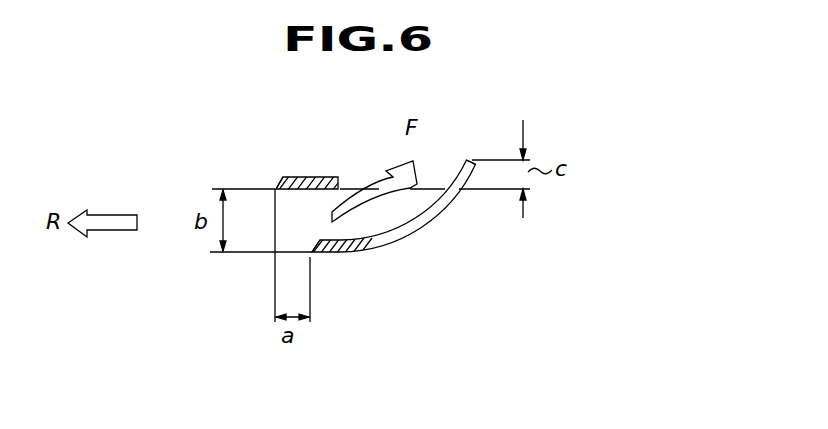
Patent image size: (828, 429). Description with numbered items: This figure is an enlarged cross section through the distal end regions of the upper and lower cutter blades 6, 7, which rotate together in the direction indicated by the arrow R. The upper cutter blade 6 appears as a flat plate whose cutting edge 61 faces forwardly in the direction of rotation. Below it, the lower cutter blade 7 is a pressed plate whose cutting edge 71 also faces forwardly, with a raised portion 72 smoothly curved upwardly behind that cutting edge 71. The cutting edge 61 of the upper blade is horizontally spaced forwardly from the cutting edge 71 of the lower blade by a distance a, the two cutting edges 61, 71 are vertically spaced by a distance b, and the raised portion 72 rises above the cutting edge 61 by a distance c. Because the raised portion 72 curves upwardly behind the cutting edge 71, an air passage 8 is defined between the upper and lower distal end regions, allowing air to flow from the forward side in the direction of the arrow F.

The upper cutter blade 6 is at (307, 176).
The cutting edges 61 is at (281, 188).
The lower cutter blade 7 is at (387, 252).
The cutting edges 71 is at (317, 240).
The raised portions 72 is at (470, 158).
The air passages 8 is at (358, 173).